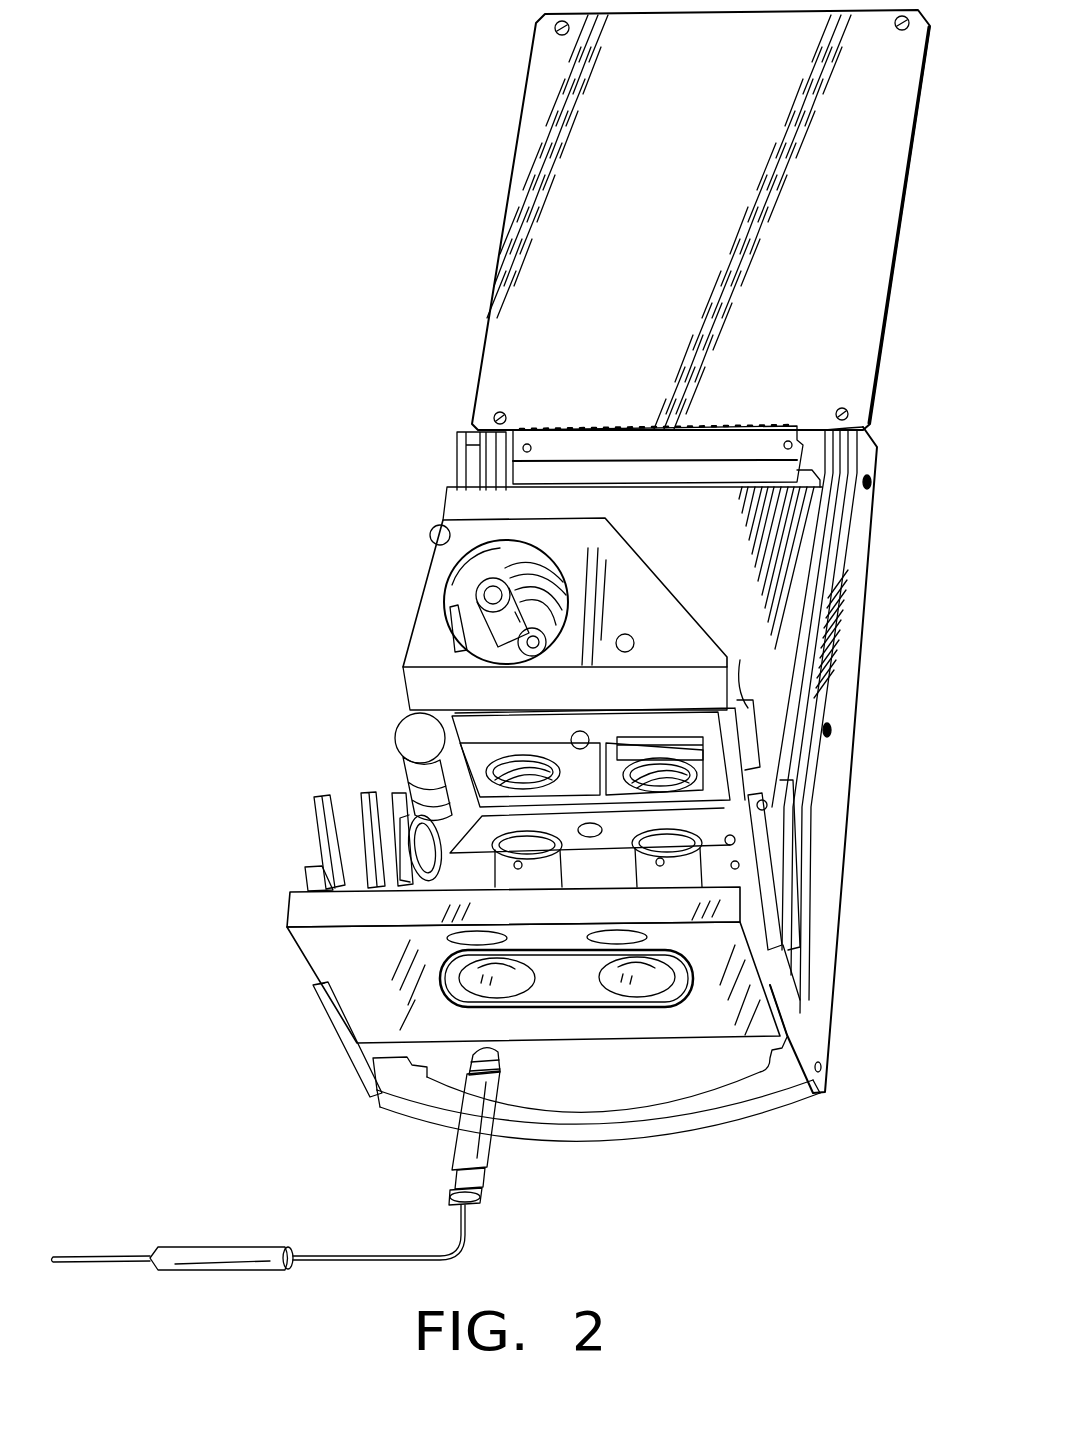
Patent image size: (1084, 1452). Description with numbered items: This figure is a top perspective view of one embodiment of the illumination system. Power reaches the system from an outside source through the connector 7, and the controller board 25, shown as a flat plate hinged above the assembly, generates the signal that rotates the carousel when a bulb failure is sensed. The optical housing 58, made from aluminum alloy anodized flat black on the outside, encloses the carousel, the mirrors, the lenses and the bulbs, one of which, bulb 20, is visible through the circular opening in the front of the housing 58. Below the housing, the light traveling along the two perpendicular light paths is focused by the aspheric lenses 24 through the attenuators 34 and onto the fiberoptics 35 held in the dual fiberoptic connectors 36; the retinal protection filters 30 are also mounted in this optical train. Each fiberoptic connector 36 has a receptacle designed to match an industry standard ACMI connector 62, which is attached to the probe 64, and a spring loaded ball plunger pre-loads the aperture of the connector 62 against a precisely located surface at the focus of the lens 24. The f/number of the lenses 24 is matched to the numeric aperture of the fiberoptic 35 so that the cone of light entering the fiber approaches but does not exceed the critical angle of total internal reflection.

The connector 7 is at (528, 430).
The bulb 20 is at (478, 590).
The aspheric lens 24 is at (715, 802).
The controller board 25 is at (505, 197).
The retinal protection filter 30 is at (665, 735).
The attenuator 34 is at (723, 847).
The fiberoptic 35 is at (403, 1254).
The fiberoptic connector 36 is at (440, 975).
The optical housing 58 is at (405, 614).
The ACMI connector 62 is at (490, 1150).
The probe 64 is at (225, 1247).